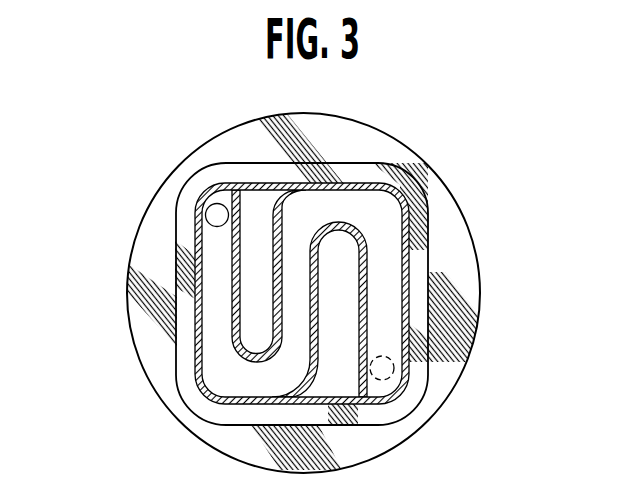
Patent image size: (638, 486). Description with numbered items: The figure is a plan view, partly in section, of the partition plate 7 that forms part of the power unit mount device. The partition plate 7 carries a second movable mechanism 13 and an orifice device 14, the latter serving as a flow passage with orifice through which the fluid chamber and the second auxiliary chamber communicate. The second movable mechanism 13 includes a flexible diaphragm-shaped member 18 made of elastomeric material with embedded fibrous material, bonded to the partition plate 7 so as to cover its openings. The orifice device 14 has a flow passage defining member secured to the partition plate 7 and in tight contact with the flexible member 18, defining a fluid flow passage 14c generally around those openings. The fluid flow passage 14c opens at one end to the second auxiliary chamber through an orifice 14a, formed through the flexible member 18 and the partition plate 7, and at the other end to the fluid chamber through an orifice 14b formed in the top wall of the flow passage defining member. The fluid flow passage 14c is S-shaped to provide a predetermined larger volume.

The partition plate 7 is at (380, 150).
The second movable mechanism 13 is at (262, 202).
The orifice device 14 is at (407, 200).
The orifice 14a is at (208, 215).
The orifice 14b is at (395, 368).
The fluid flow passage 14c is at (407, 292).
The flexible diaphragm-shaped member 18 is at (353, 390).